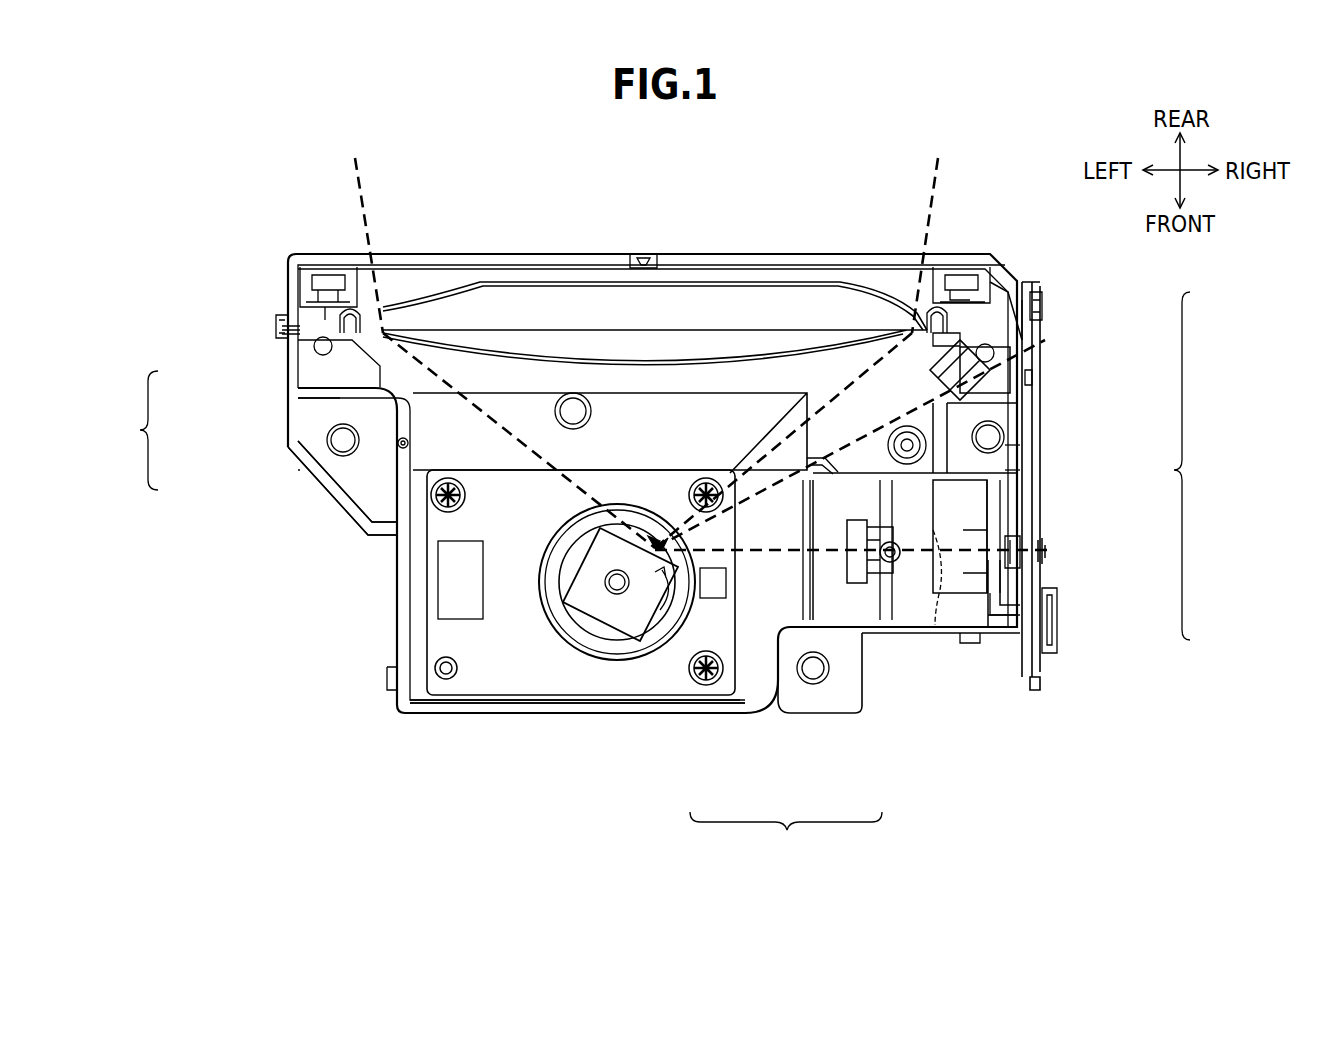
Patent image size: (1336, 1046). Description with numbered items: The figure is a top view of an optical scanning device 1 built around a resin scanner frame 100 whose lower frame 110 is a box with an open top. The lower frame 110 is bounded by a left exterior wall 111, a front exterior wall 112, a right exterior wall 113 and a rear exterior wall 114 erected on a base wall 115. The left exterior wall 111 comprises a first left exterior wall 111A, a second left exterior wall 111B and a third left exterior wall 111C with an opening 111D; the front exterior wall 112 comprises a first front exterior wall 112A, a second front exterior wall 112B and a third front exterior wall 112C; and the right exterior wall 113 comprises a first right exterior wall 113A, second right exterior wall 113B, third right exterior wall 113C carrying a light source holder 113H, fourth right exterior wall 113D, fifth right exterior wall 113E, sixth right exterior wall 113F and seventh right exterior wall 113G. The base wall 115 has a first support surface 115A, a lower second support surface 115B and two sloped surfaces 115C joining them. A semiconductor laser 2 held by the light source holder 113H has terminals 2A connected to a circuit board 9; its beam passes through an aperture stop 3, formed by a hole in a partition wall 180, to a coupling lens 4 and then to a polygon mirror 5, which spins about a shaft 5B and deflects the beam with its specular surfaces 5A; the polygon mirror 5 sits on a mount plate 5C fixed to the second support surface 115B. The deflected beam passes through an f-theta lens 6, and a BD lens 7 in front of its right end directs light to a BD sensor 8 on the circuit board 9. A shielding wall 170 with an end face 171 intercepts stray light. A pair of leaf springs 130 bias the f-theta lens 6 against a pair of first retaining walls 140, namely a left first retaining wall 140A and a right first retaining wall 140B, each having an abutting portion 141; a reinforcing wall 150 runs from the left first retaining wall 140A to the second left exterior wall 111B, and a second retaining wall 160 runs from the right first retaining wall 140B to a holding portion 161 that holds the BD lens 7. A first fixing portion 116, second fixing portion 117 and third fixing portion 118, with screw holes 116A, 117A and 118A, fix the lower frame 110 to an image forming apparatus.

The optical scanning device 1 is at (846, 191).
The semiconductor laser 2 is at (1030, 558).
The terminals 2A is at (1050, 550).
The aperture stop 3 is at (940, 590).
The coupling lens 4 is at (888, 560).
The polygon mirror 5 is at (615, 639).
The specular surface 5A is at (655, 630).
The shaft 5B is at (610, 596).
The mount plate 5C is at (538, 665).
The f-theta lens 6 is at (543, 296).
The BD lens 7 is at (932, 376).
The BD sensor 8 is at (1030, 333).
The circuit board 9 is at (1035, 378).
The scanner frame 100 is at (652, 483).
The lower frame 110 is at (598, 250).
The left exterior wall 111 is at (131, 430).
The first left exterior wall 111A is at (292, 358).
The second left exterior wall 111B is at (320, 395).
The third left exterior wall 111C is at (330, 470).
The opening 111D is at (398, 660).
The front exterior wall 112 is at (786, 834).
The first front exterior wall 112A is at (698, 707).
The second front exterior wall 112B is at (773, 690).
The third front exterior wall 112C is at (847, 668).
The right exterior wall 113 is at (1131, 486).
The first right exterior wall 113A is at (1032, 618).
The second right exterior wall 113B is at (1010, 578).
The third right exterior wall 113C is at (995, 505).
The fourth right exterior wall 113D is at (972, 478).
The fifth right exterior wall 113E is at (952, 455).
The sixth right exterior wall 113F is at (1003, 392).
The seventh right exterior wall 113G is at (1020, 306).
The light source holder 113H is at (996, 605).
The rear exterior wall 114 is at (748, 258).
The base wall 115 is at (845, 600).
The first support surface 115A is at (845, 380).
The second support surface 115B is at (417, 614).
The sloped surface 115C is at (682, 445).
The first fixing portion 116 is at (368, 515).
The first screw hole 116A is at (320, 446).
The second fixing portion 117 is at (1012, 425).
The second screw hole 117A is at (935, 425).
The third fixing portion 118 is at (828, 688).
The third screw hole 118A is at (806, 688).
The leaf spring 130 is at (322, 266).
The first retaining wall 140 is at (645, 341).
The left first retaining wall 140A is at (305, 342).
The right first retaining wall 140B is at (993, 356).
The abutting portion 141 is at (300, 322).
The reinforcing wall 150 is at (378, 262).
The second retaining wall 160 is at (920, 262).
The holding portion 161 is at (928, 347).
The shielding wall 170 is at (833, 482).
The end face 171 is at (850, 466).
The partition wall 180 is at (920, 590).